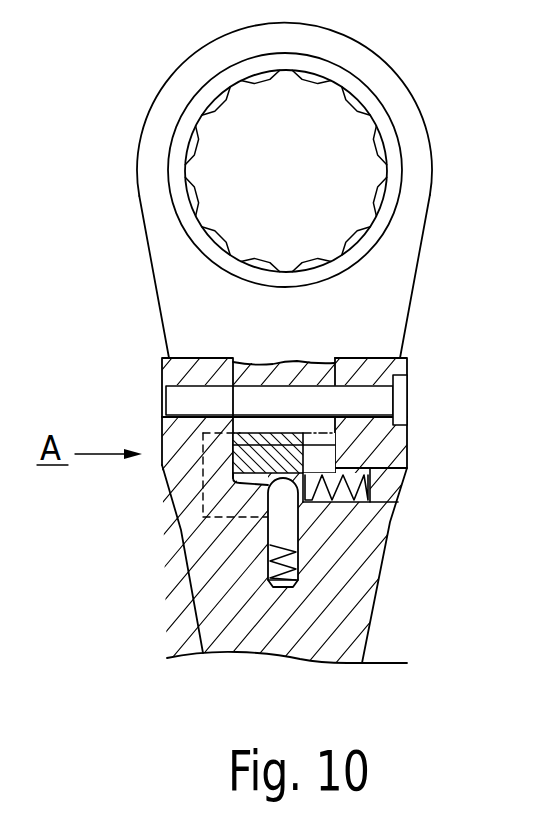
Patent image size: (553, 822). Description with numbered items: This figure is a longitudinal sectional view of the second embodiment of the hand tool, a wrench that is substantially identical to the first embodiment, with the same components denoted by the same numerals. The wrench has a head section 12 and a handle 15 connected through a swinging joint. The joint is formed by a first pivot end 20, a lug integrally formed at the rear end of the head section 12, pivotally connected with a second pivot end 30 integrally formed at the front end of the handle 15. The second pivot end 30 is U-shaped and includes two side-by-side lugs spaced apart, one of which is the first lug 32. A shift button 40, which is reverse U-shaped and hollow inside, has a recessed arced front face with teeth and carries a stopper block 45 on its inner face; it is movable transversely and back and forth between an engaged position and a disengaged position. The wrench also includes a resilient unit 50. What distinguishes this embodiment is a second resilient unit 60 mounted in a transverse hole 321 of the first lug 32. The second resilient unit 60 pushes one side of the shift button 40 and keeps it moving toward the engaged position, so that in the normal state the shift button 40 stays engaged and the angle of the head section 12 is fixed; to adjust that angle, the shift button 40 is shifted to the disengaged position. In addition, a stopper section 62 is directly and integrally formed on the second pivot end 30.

The head section 12 is at (426, 134).
The handle 15 is at (358, 630).
The first pivot end 20 is at (308, 366).
The second pivot end 30 is at (426, 345).
The first lug 32 is at (407, 372).
The transverse hole 321 is at (376, 466).
The shift button 40 is at (258, 422).
The stopper block 45 is at (240, 446).
The resilient unit 50 is at (313, 567).
The second resilient unit 60 is at (370, 487).
The stopper section 62 is at (200, 522).